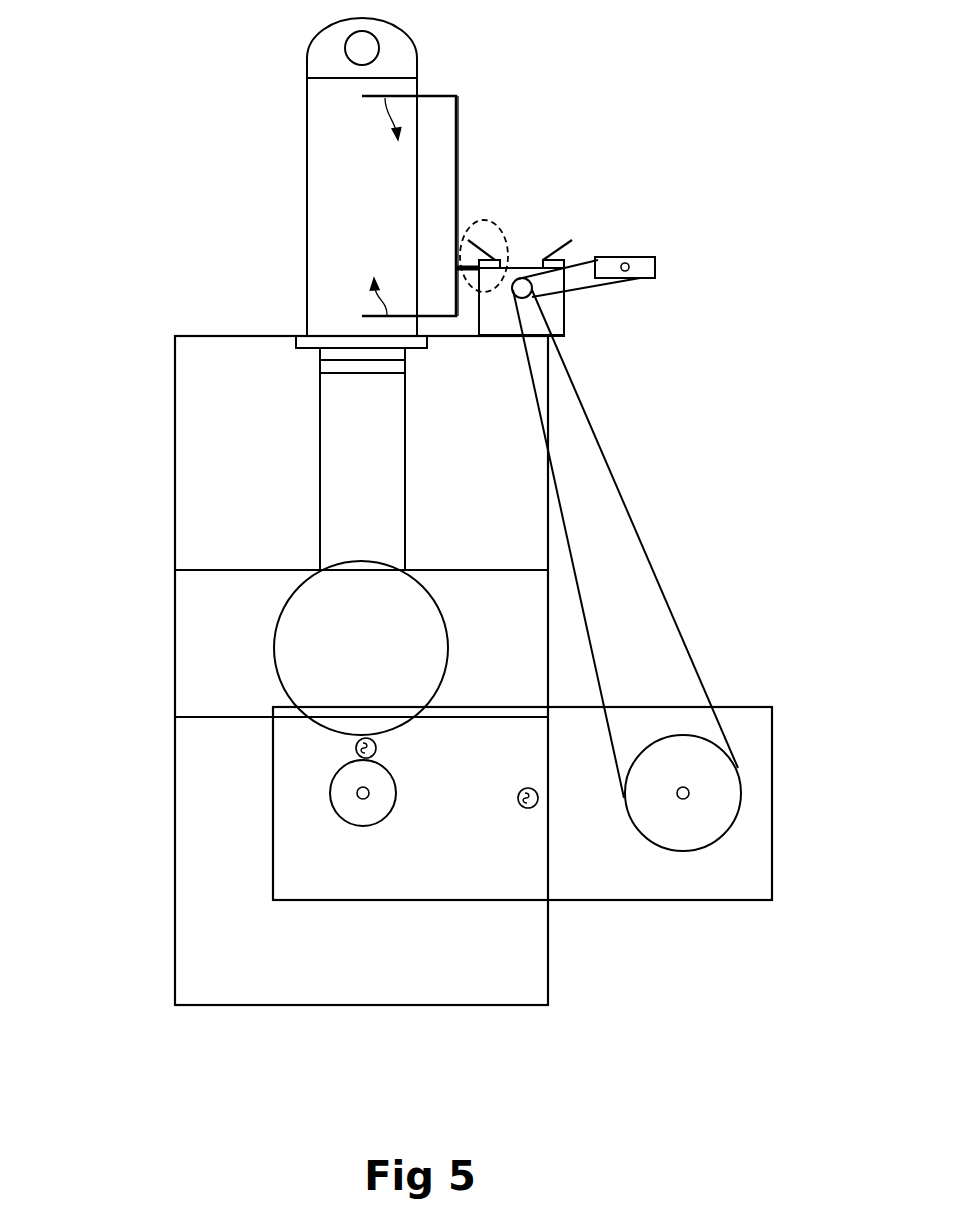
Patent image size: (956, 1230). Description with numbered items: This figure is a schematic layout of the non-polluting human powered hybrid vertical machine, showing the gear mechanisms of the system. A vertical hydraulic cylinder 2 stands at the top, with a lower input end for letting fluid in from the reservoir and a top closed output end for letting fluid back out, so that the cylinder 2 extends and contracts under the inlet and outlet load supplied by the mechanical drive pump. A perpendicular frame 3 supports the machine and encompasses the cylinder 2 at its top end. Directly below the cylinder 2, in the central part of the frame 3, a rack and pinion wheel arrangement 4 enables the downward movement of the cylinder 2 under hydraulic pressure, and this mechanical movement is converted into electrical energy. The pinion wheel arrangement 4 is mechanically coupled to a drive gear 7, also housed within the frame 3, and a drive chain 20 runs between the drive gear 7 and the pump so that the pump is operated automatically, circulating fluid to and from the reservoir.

The vertical hydraulic cylinder 2 is at (307, 197).
The rack and pinion wheel arrangement 4 is at (320, 482).
The perpendicular frame 3 is at (175, 637).
The drive gear 7 is at (772, 787).
The drive chain 20 is at (623, 508).